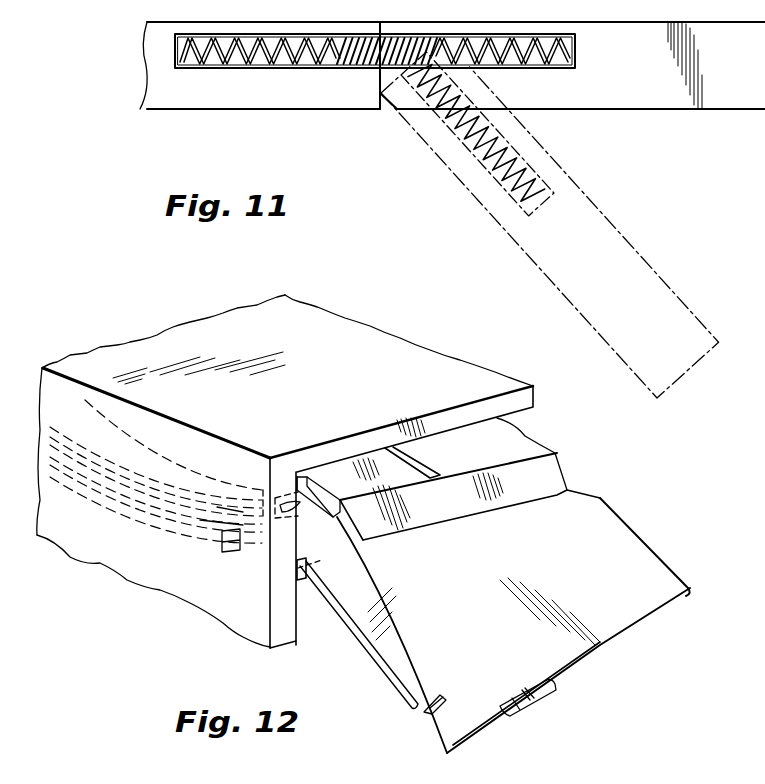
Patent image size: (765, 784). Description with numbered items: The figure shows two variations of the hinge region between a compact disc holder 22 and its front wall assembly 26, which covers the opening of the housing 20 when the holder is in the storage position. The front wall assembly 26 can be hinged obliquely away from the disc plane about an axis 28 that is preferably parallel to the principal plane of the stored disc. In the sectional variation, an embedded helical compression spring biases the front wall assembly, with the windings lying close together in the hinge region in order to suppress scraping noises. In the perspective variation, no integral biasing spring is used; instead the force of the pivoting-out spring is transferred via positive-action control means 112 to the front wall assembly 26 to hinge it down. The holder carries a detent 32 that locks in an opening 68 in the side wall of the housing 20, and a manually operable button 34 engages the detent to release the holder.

In FIG. 12, the housing 20 is at (423, 370).
In FIG. 11, the disc holder 22 is at (207, 112).
In FIG. 12, the disc holder 22 is at (632, 523).
In FIG. 11, the front wall assembly 26 is at (722, 100).
In FIG. 12, the front wall assembly 26 is at (632, 606).
In FIG. 11, the hinge axis 28 is at (378, 93).
In FIG. 12, the hinge axis 28 is at (305, 561).
In FIG. 12, the detent 32 is at (428, 706).
In FIG. 12, the manually operable button 34 is at (548, 688).
In FIG. 12, the opening 68 is at (232, 552).
In FIG. 12, the positive-action control means 112 is at (300, 492).